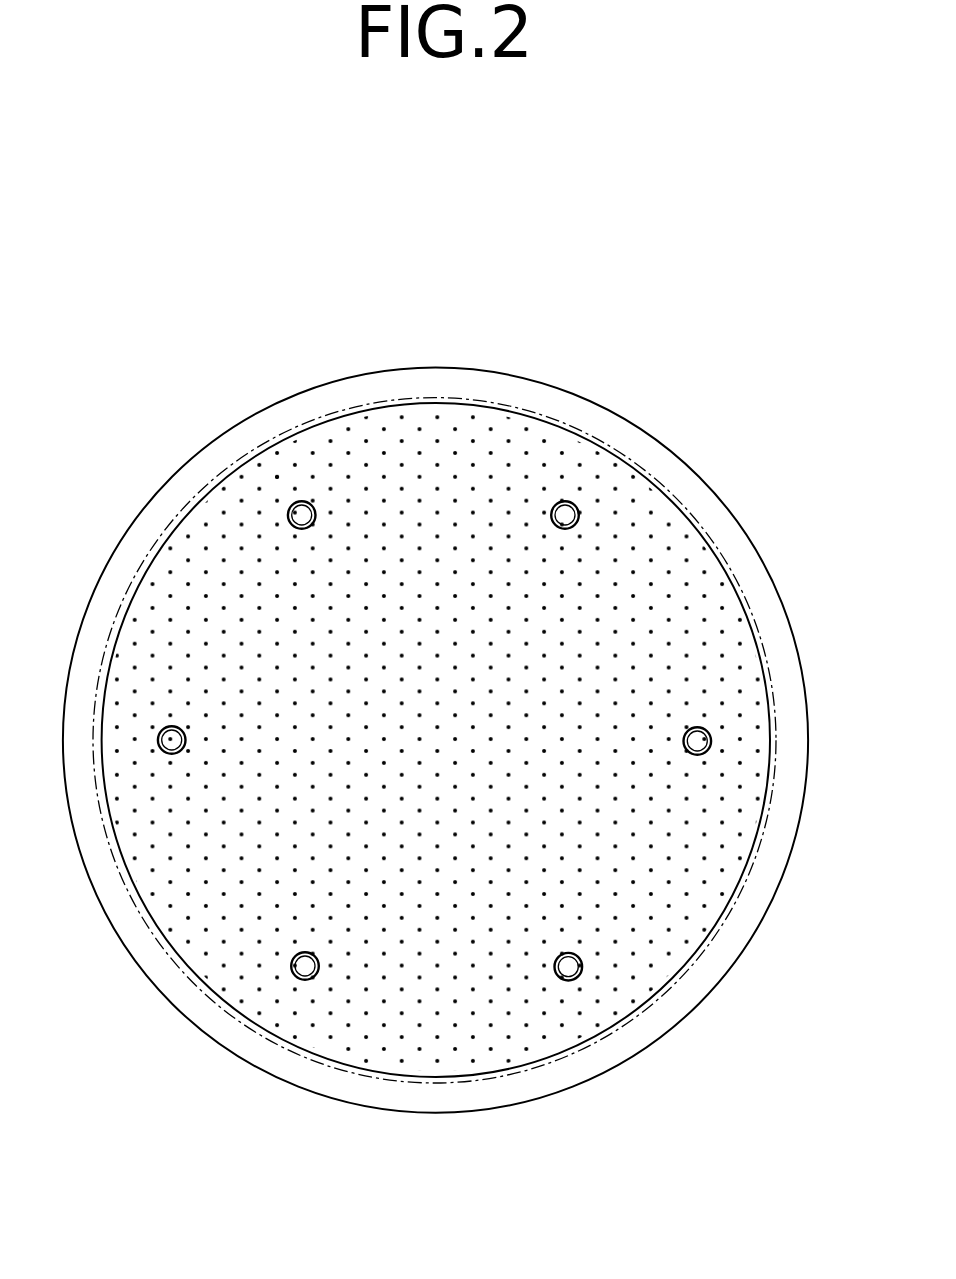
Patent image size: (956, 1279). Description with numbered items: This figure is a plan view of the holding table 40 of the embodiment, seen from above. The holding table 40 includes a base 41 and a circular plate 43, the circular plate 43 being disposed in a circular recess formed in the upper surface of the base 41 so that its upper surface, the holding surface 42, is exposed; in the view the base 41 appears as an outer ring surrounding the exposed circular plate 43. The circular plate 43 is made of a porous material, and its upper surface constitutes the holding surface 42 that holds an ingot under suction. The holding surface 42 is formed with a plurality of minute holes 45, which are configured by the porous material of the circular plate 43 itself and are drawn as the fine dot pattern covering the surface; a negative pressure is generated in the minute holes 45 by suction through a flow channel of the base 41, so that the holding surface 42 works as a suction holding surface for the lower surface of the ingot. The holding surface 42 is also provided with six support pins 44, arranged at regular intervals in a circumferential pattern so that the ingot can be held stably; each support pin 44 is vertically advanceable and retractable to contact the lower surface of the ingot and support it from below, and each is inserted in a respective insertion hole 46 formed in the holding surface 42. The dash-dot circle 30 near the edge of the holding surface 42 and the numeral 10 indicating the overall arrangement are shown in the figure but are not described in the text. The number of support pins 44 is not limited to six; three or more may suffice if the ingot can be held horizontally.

The substrate holding device 10 is at (242, 318).
The substrate outline 30 is at (480, 402).
The holding table 40 is at (687, 467).
The base 41 is at (223, 431).
The holding surface 42 is at (418, 417).
The circular plate 43 is at (343, 408).
The support pins 44 is at (304, 513).
The minute holes 45 is at (276, 476).
The insertion holes 46 is at (312, 527).